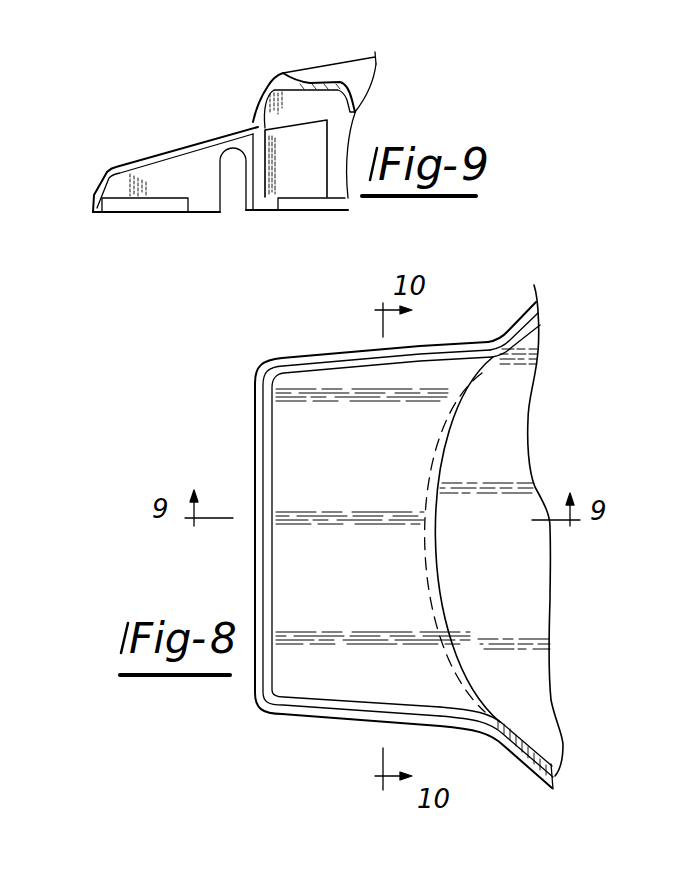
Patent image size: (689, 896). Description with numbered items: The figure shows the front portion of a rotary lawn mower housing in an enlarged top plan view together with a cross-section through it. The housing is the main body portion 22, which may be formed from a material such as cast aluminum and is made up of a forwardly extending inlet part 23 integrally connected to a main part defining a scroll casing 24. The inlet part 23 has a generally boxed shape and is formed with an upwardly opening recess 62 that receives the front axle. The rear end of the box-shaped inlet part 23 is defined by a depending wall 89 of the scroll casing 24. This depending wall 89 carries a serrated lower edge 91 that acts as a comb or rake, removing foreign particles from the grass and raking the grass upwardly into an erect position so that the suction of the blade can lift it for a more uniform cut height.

In FIG. 9, the main body portion 22 is at (300, 73).
In FIG. 8, the main body portion 22 is at (517, 325).
In FIG. 9, the inlet part 23 is at (133, 163).
In FIG. 8, the inlet part 23 is at (284, 425).
In FIG. 9, the scroll casing 24 is at (357, 68).
In FIG. 8, the scroll casing 24 is at (513, 397).
In FIG. 9, the upwardly opening recess 62 is at (235, 160).
In FIG. 9, the depending wall 89 is at (258, 163).
In FIG. 8, the depending wall 89 is at (437, 452).
In FIG. 9, the serrated lower edge 91 is at (262, 196).